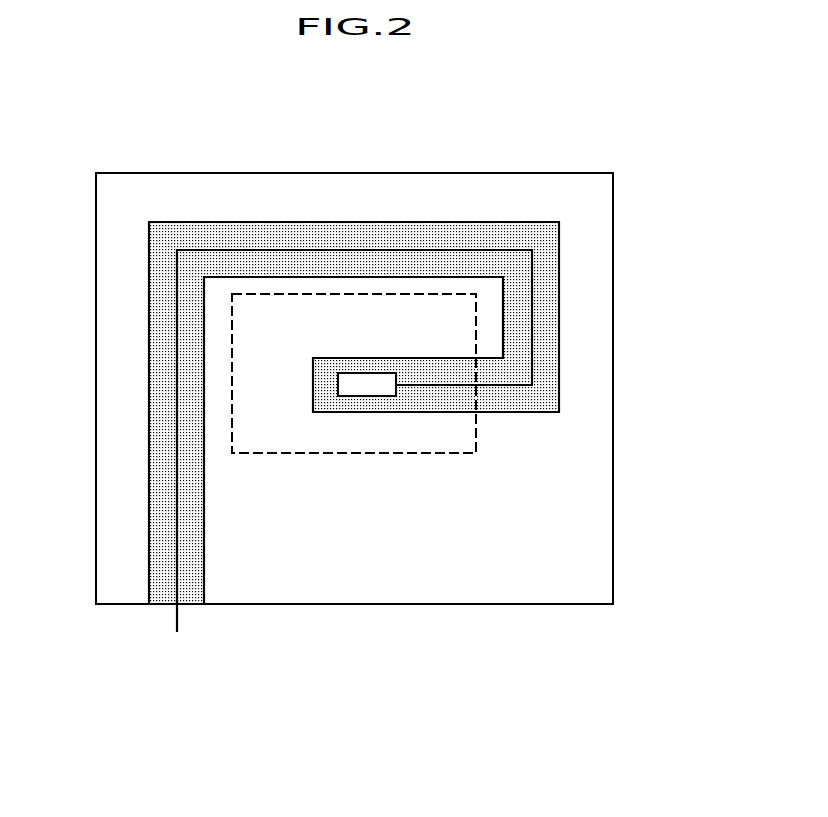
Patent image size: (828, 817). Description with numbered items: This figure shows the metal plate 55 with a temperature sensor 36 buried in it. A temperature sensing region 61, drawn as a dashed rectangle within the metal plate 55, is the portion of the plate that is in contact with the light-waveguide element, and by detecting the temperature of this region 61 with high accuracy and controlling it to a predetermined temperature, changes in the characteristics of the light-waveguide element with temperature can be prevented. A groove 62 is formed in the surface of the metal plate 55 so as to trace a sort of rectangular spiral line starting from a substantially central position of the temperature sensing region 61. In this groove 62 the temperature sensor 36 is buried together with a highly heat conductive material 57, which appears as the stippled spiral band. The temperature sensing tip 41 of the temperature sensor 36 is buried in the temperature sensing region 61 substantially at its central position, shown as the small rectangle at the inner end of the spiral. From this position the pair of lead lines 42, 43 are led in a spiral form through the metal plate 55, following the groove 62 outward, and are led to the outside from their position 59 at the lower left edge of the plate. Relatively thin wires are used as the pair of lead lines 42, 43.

The temperature sensor 36 is at (378, 248).
The temperature sensing tip 41 is at (336, 375).
The lead line 42 is at (178, 622).
The lead line 43 is at (239, 636).
The metal plate 55 is at (613, 369).
The highly heat conductive material 57 is at (548, 290).
The position 59 is at (172, 617).
The temperature sensing region 61 is at (425, 453).
The groove 62 is at (437, 413).